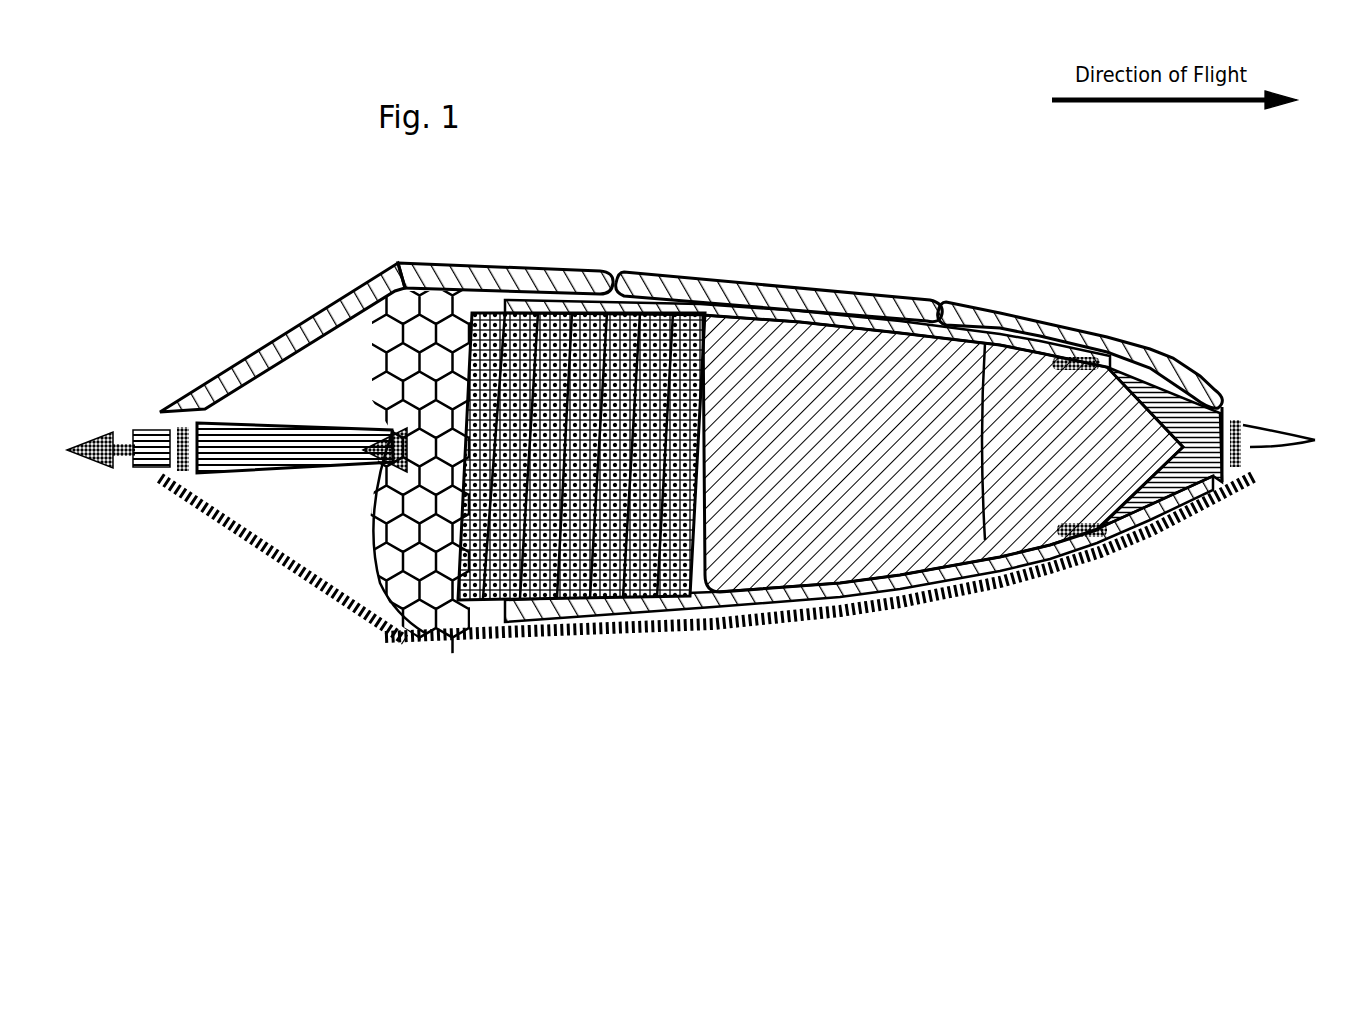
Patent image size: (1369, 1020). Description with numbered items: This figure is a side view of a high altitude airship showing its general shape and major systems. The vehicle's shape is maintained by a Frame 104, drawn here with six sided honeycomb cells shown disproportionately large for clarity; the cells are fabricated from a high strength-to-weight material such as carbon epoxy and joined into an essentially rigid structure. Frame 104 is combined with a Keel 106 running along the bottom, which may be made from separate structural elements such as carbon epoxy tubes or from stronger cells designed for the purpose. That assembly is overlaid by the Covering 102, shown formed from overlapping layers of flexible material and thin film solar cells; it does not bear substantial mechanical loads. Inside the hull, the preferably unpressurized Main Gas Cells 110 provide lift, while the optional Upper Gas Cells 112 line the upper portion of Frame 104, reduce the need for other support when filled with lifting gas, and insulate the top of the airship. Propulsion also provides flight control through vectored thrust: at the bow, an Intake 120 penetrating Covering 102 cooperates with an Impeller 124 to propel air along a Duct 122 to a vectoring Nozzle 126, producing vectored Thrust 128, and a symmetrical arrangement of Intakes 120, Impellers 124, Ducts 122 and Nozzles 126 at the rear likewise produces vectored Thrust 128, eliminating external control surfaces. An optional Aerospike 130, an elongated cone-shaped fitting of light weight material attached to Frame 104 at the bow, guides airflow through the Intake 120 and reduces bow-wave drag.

The covering 102 is at (645, 290).
The frame 104 is at (440, 350).
The keel 106 is at (838, 613).
The main gas cells 110 is at (870, 447).
The upper gas cells 112 is at (947, 310).
The intake 120 is at (425, 633).
The duct 122 is at (1185, 482).
The impeller 124 is at (163, 527).
The nozzle 126 is at (157, 450).
The thrust 128 is at (93, 432).
The aerospike 130 is at (1256, 447).